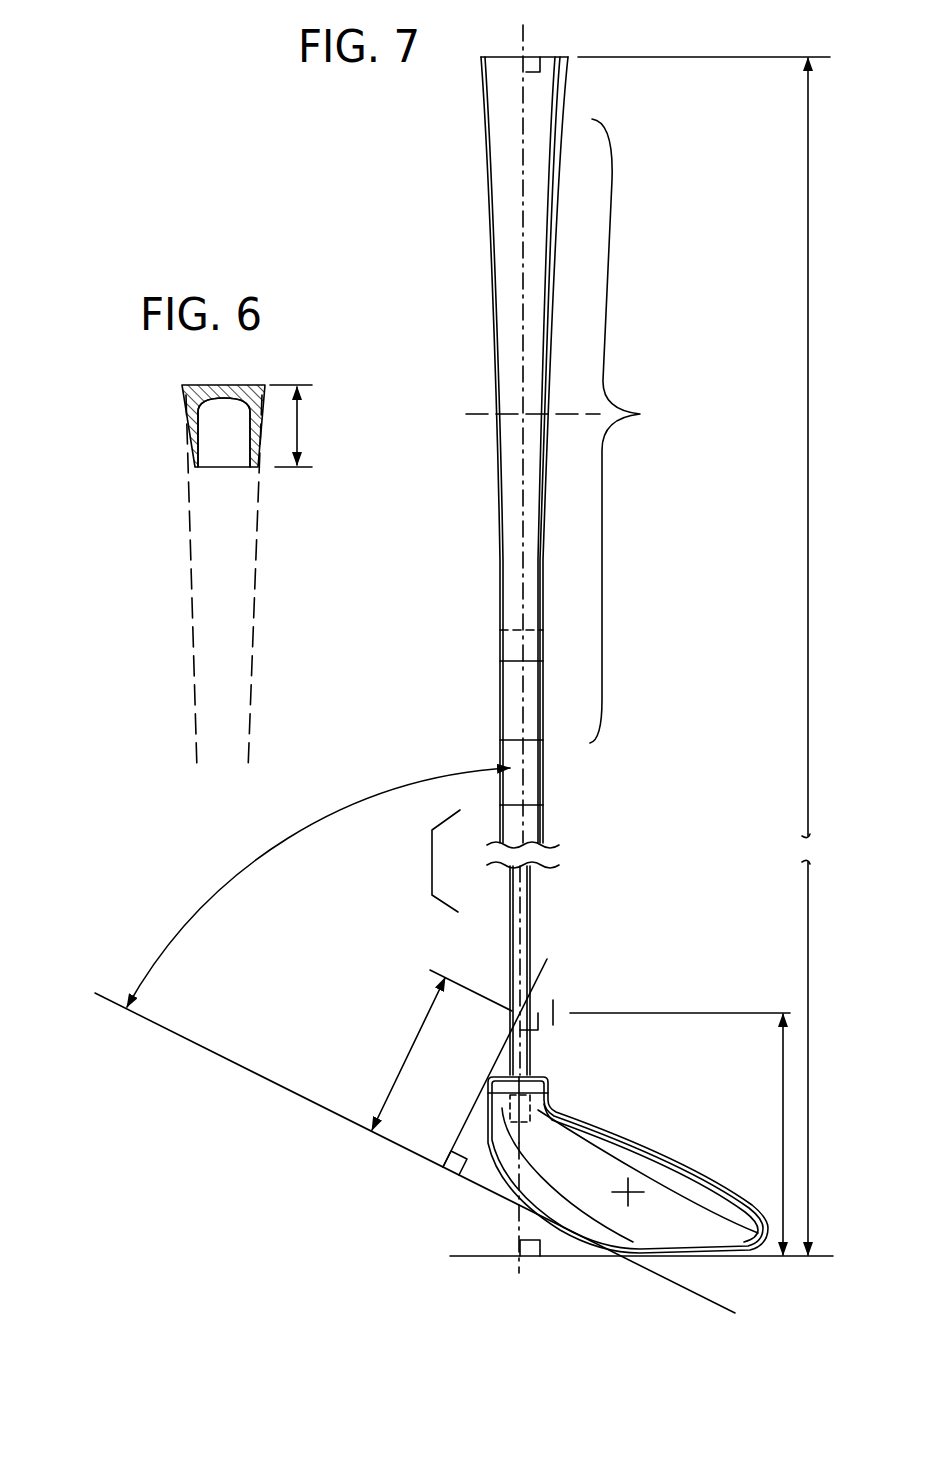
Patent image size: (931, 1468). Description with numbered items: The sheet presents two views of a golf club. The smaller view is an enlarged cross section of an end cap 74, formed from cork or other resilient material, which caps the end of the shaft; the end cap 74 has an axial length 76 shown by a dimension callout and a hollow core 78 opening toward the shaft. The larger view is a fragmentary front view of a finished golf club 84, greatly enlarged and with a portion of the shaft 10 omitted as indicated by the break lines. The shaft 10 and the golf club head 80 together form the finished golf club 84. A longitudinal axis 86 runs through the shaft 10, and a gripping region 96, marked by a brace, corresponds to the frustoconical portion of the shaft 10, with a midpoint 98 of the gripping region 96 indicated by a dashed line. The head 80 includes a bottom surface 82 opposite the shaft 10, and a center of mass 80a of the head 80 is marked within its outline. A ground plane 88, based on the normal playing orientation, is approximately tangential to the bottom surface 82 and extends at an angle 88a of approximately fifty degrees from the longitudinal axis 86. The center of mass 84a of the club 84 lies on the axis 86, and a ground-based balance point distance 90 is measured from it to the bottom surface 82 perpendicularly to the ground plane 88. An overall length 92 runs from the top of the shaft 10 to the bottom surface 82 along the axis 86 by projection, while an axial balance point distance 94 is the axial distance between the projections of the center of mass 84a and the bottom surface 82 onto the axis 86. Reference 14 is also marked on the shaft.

In FIG. 7, the shaft 10 is at (455, 250).
In FIG. 7, the shaft 14 is at (477, 96).
In FIG. 6, the end cap 74 is at (176, 428).
In FIG. 6, the axial length 76 is at (300, 435).
In FIG. 6, the hollow core 78 is at (215, 452).
In FIG. 7, the golf club head 80 is at (657, 1142).
In FIG. 7, the center of mass 80a is at (636, 1190).
In FIG. 7, the bottom surface 82 is at (622, 1252).
In FIG. 7, the finished golf club 84 is at (383, 978).
In FIG. 7, the center of mass 84a is at (554, 1011).
In FIG. 7, the longitudinal axis 86 is at (530, 40).
In FIG. 7, the ground plane 88 is at (403, 1150).
In FIG. 7, the angle 88a is at (220, 887).
In FIG. 7, the ground-based balance point distance 90 is at (404, 1056).
In FIG. 7, the overall length 92 is at (806, 420).
In FIG. 7, the axial balance point distance 94 is at (781, 1098).
In FIG. 7, the gripping region 96 is at (635, 431).
In FIG. 7, the midpoint 98 is at (482, 414).